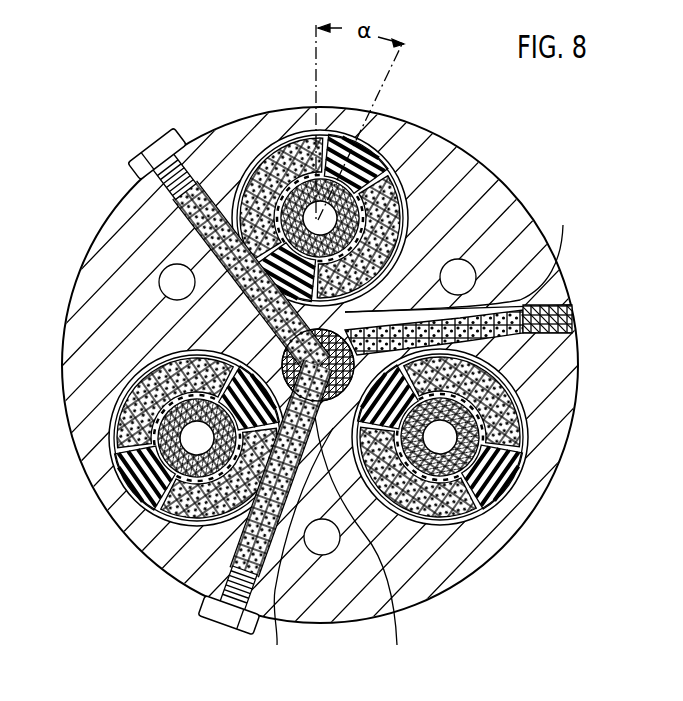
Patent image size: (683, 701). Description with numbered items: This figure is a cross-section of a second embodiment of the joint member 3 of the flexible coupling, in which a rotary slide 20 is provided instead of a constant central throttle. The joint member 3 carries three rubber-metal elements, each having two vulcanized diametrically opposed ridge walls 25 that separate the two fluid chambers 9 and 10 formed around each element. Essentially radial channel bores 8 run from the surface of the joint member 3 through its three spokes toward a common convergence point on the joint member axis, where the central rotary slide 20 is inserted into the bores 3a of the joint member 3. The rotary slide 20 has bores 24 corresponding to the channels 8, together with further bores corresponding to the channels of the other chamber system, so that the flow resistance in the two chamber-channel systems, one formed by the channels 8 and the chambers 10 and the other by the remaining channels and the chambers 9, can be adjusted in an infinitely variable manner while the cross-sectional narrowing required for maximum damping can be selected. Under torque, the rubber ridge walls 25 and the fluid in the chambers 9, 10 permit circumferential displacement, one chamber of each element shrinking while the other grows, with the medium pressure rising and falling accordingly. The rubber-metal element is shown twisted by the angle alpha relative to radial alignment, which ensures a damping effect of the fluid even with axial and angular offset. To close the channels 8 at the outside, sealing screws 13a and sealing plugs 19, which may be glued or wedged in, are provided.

The joint member 3 is at (455, 557).
The bores of the joint member 3a is at (367, 534).
The channel bores 8 is at (195, 233).
The fluid chamber 9 is at (410, 193).
The fluid chamber 10 is at (290, 150).
The sealing screws 13a is at (163, 157).
The sealing plugs 19 is at (555, 320).
The rotary slide 20 is at (302, 550).
The bores of the rotary slide 24 is at (461, 252).
The ridge walls 25 is at (360, 190).